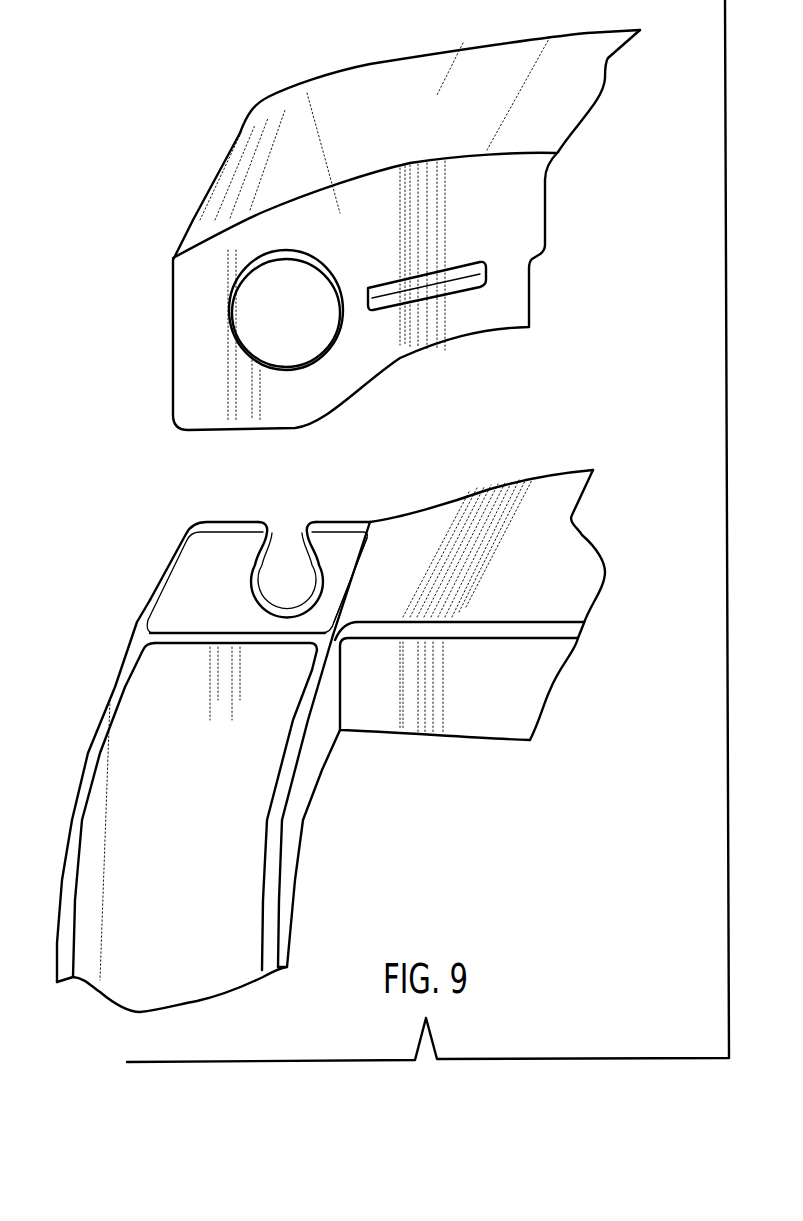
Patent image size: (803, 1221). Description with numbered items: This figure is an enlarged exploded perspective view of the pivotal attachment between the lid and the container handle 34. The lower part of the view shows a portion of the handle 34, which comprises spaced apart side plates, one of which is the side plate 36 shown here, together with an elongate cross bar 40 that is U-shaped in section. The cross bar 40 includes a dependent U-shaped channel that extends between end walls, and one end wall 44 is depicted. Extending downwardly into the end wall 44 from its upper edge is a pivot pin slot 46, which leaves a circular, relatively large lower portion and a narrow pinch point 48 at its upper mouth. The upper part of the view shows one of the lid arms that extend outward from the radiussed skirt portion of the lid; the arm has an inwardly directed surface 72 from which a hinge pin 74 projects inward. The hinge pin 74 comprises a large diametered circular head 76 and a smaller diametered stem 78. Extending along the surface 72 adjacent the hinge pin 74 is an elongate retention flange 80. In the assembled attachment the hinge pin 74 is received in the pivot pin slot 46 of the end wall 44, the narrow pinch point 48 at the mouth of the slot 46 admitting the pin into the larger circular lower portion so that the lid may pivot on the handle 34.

The handle 34 is at (309, 711).
The side plate 36 is at (470, 575).
The cross bar 40 is at (176, 806).
The end wall 44 is at (263, 547).
The pivot pin slot 46 is at (308, 576).
The pinch point 48 is at (306, 526).
The inwardly directed surface 72 is at (406, 142).
The hinge pin 74 is at (373, 222).
The circular head 76 is at (224, 310).
The stem 78 is at (339, 281).
The retention flange 80 is at (427, 162).